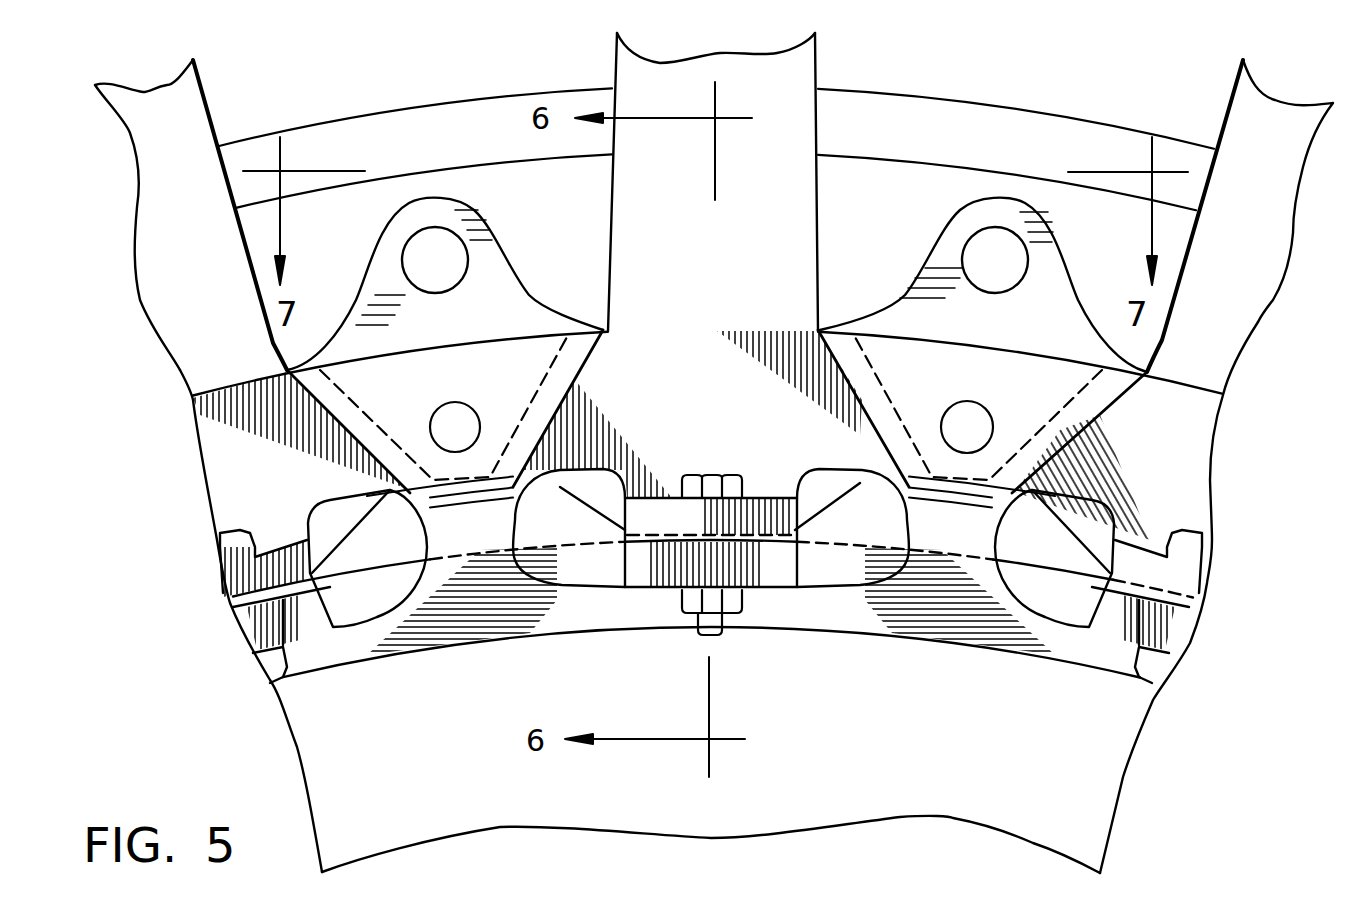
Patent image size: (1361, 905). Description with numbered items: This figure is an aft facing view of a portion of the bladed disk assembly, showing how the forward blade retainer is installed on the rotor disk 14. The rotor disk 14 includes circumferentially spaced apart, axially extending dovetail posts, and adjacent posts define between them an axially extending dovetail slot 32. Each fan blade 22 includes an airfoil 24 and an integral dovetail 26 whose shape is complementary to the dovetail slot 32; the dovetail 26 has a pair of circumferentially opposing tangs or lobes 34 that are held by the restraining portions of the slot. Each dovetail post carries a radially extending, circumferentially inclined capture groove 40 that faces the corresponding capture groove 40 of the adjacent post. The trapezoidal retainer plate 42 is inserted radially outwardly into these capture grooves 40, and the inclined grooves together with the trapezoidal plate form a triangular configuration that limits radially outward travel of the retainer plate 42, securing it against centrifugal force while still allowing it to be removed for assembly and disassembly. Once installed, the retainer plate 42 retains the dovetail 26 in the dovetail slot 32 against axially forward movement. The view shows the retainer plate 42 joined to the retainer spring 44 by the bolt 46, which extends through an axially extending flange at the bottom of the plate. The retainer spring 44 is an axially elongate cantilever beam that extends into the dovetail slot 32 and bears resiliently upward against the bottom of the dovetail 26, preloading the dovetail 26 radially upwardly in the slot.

The rotor disk 14 is at (1127, 777).
The fan blade 22 is at (828, 66).
The airfoil 24 is at (815, 216).
The dovetail 26 is at (700, 367).
The dovetail slot 32 is at (574, 565).
The tangs or lobes 34 is at (578, 483).
The capture grooves 40 is at (560, 380).
The retainer plate 42 is at (685, 411).
The retainer spring 44 is at (800, 587).
The bolt 46 is at (712, 477).